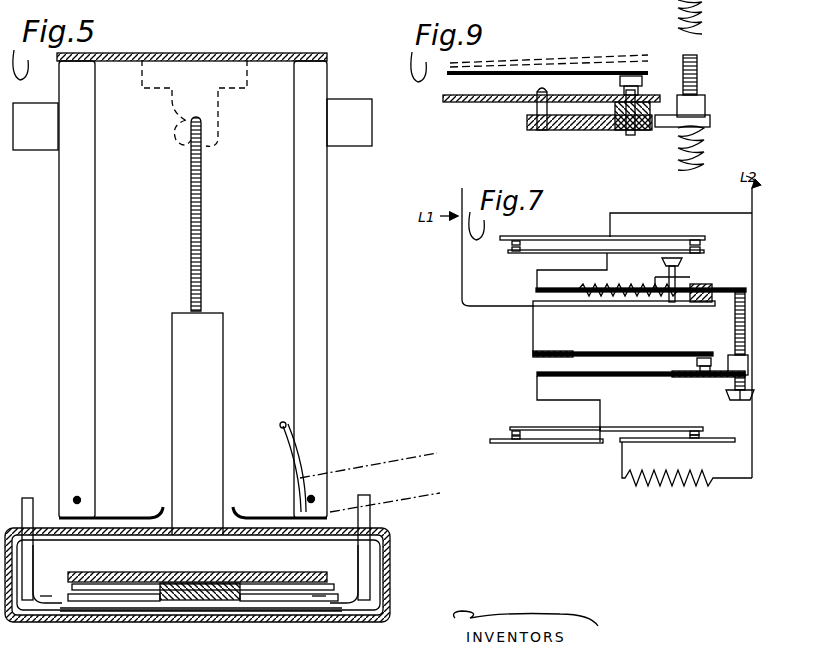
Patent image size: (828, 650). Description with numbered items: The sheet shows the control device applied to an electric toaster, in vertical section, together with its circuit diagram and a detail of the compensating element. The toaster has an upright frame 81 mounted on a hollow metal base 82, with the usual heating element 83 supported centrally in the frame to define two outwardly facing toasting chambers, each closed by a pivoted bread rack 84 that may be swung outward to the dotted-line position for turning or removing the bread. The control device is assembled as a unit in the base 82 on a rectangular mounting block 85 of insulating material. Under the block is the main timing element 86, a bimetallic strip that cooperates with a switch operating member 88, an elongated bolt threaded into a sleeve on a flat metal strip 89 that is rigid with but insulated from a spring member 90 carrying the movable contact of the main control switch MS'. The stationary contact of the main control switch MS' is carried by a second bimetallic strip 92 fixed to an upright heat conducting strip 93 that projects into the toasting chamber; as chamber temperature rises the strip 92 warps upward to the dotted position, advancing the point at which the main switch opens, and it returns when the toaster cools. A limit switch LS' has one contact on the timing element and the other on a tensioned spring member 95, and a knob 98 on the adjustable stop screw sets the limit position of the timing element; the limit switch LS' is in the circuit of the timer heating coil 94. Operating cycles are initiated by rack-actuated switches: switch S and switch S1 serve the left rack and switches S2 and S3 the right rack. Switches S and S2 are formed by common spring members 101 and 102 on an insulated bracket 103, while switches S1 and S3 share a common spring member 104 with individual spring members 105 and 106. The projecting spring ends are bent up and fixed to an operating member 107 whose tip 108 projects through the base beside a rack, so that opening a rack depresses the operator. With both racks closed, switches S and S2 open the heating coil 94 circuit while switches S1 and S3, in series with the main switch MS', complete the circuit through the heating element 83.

In FIG. 5, the upright frame 81 is at (268, 53).
In FIG. 5, the hollow metal base 82 is at (386, 556).
In FIG. 5, the heating element 83 is at (201, 185).
In FIG. 7, the heating element 83 is at (680, 485).
In FIG. 5, the pivoted bread rack 84 is at (327, 372).
In FIG. 5, the mounting block 85 is at (110, 572).
In FIG. 7, the main timing element 86 is at (536, 291).
In FIG. 9, the switch operating member 88 is at (697, 80).
In FIG. 7, the switch operating member 88 is at (735, 329).
In FIG. 9, the flat metal strip 89 is at (580, 130).
In FIG. 9, the spring member 90 is at (490, 102).
In FIG. 7, the spring member 90 is at (650, 378).
In FIG. 5, the bimetallic strip 92 is at (246, 540).
In FIG. 9, the bimetallic strip 92 is at (535, 72).
In FIG. 7, the bimetallic strip 92 is at (622, 352).
In FIG. 5, the upright metal strip 93 is at (222, 356).
In FIG. 7, the upright metal strip 93 is at (536, 357).
In FIG. 7, the timer heating coil 94 is at (628, 287).
In FIG. 7, the tensioned spring member 95 is at (628, 306).
In FIG. 7, the knob 98 is at (683, 263).
In FIG. 7, the spring member 101 is at (592, 236).
In FIG. 7, the spring member 102 is at (536, 255).
In FIG. 5, the insulated bracket 103 is at (200, 610).
In FIG. 5, the common spring member 104 is at (255, 590).
In FIG. 7, the common spring member 104 is at (668, 427).
In FIG. 5, the individual spring member 105 is at (105, 606).
In FIG. 7, the individual spring member 105 is at (562, 443).
In FIG. 5, the individual spring member 106 is at (290, 606).
In FIG. 7, the individual spring member 106 is at (668, 442).
In FIG. 5, the operating member 107 is at (35, 560).
In FIG. 5, the tip 108 is at (24, 500).
In FIG. 7, the switch S is at (508, 247).
In FIG. 5, the switch S1 is at (47, 596).
In FIG. 7, the switch S1 is at (508, 436).
In FIG. 7, the switch S2 is at (704, 246).
In FIG. 5, the switch S3 is at (318, 600).
In FIG. 7, the switch S3 is at (704, 434).
In FIG. 9, the main control switch MS' is at (644, 48).
In FIG. 7, the main control switch MS' is at (686, 352).
In FIG. 7, the limit switch LS' is at (668, 316).